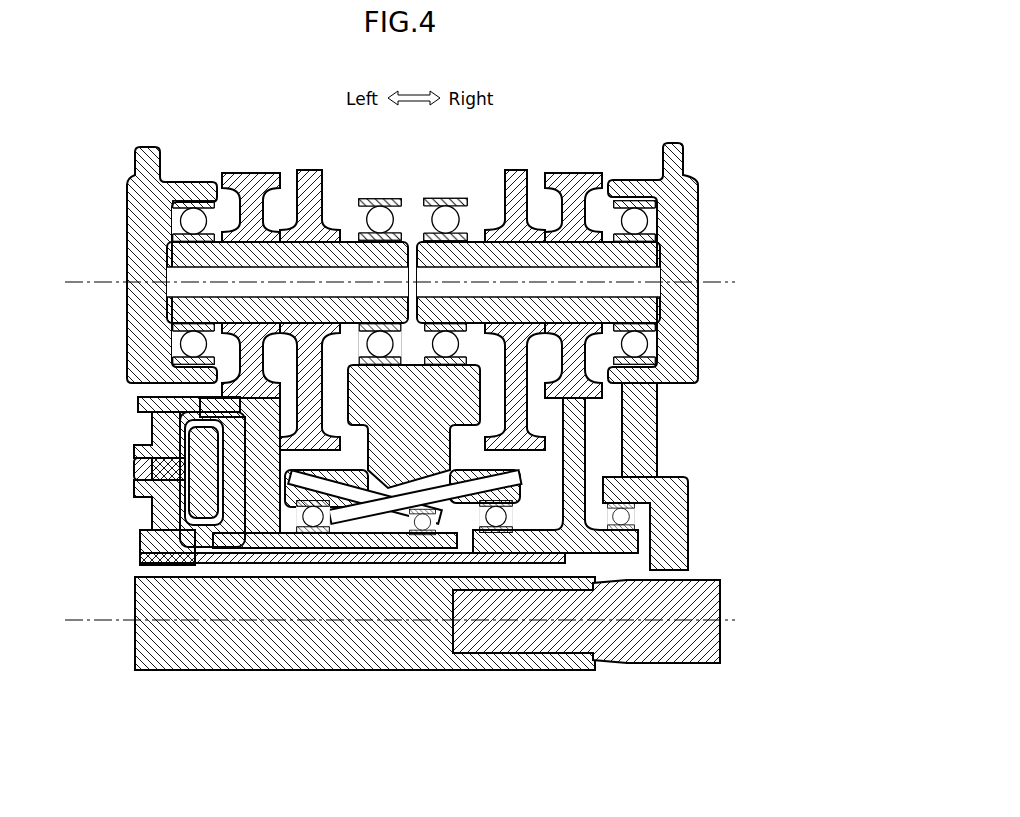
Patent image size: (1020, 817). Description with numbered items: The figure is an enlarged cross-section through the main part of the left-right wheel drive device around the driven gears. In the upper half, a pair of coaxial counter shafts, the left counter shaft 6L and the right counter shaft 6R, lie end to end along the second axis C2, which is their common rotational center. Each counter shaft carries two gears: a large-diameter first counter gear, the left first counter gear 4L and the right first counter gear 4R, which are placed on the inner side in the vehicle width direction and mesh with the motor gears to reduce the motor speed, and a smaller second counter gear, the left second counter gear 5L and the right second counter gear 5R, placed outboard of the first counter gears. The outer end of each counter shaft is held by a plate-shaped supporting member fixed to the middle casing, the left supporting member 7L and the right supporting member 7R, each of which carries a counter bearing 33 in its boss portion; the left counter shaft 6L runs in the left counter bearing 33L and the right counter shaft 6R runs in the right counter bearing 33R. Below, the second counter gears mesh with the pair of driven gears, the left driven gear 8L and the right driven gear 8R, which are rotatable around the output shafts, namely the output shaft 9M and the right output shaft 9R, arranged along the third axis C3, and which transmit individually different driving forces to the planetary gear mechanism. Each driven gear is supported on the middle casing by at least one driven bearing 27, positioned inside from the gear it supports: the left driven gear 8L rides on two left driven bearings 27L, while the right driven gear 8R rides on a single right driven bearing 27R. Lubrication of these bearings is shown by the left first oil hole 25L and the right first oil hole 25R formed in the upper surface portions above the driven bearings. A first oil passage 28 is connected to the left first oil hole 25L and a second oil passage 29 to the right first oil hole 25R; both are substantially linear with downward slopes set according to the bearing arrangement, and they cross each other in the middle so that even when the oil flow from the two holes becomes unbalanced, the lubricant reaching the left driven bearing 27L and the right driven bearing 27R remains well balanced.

The left first counter gear 4L is at (323, 170).
The right first counter gear 4R is at (496, 237).
The left second counter gear 5L is at (252, 173).
The right second counter gear 5R is at (573, 173).
The left counter shaft 6L is at (349, 238).
The right counter shaft 6R is at (473, 238).
The left supporting member 7L is at (127, 231).
The right supporting member 7R is at (699, 231).
The left driven gear 8L is at (240, 432).
The right driven gear 8R is at (588, 420).
The output shaft 9M is at (442, 672).
The right output shaft 9R is at (661, 666).
The left first oil hole 25L is at (235, 480).
The right first oil hole 25R is at (603, 493).
The driven bearing 27 is at (430, 626).
The left driven bearing 27L is at (425, 536).
The right driven bearing 27R is at (497, 533).
The first oil passage 28 is at (320, 472).
The second oil passage 29 is at (640, 531).
The counter bearing 33 is at (417, 285).
The left counter bearing 33L is at (180, 350).
The right counter bearing 33R is at (645, 350).
The second axis C2 is at (380, 282).
The third axis C3 is at (380, 620).